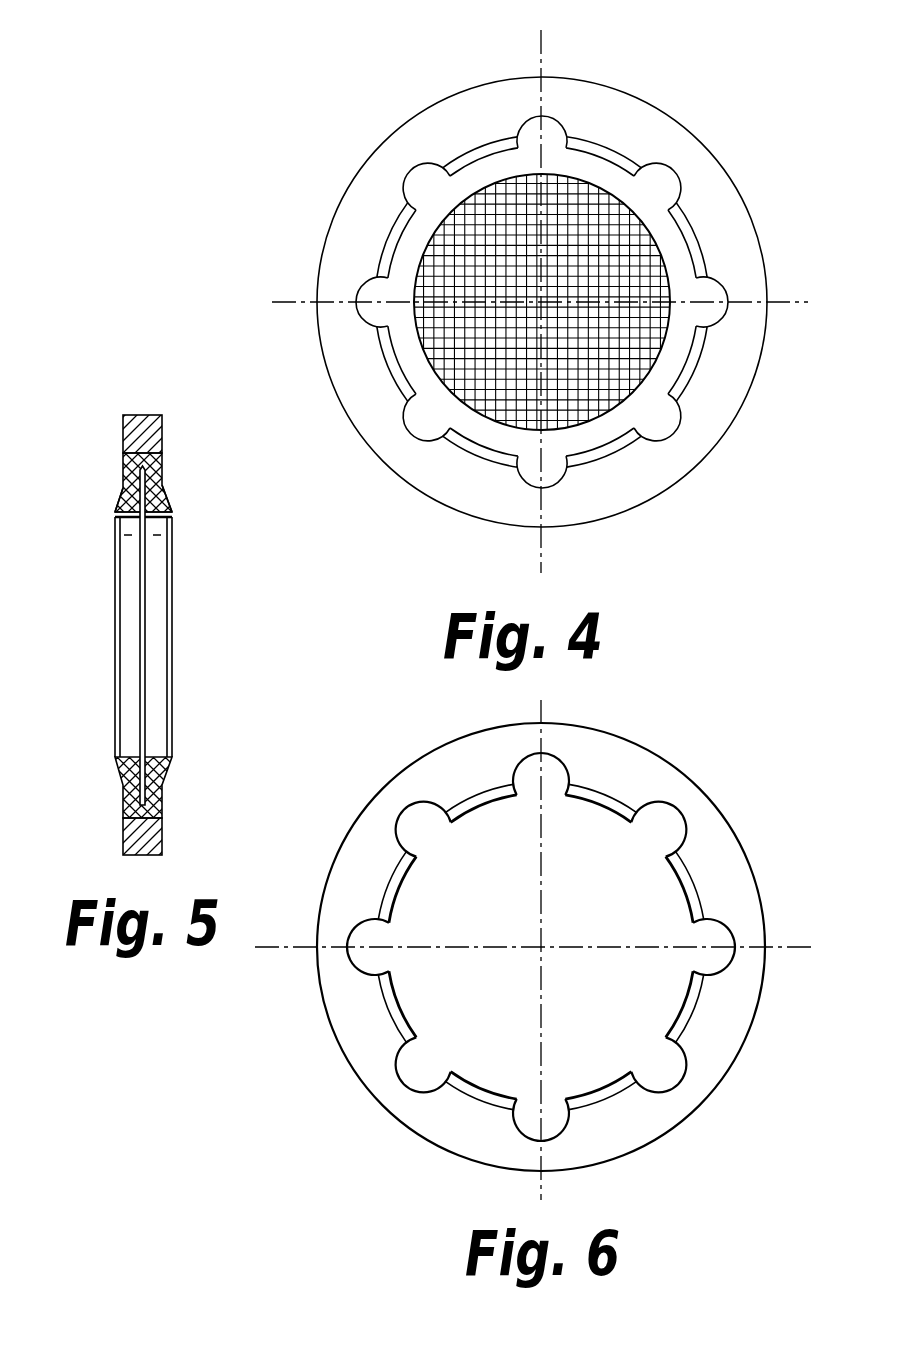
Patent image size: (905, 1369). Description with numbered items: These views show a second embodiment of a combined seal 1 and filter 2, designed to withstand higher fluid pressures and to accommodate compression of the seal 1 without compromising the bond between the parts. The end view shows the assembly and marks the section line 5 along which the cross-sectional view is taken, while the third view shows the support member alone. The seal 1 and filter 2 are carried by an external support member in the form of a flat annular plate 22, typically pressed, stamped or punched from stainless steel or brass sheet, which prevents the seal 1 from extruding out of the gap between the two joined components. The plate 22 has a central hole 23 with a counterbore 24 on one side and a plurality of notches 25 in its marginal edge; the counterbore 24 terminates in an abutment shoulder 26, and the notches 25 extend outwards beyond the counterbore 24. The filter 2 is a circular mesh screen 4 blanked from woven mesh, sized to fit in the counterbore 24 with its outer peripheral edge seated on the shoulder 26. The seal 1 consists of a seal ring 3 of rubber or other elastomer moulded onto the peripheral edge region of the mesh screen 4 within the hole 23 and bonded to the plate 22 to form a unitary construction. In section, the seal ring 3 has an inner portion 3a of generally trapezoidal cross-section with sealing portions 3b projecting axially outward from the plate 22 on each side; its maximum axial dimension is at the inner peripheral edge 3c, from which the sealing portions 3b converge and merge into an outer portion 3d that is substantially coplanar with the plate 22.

In FIG. 5, the seal 1 is at (142, 644).
In FIG. 5, the filter 2 is at (146, 635).
In FIG. 4, the seal ring 3 is at (690, 368).
In FIG. 5, the seal ring 3 is at (142, 644).
In FIG. 5, the inner portion 3a is at (184, 768).
In FIG. 5, the sealing portions 3b is at (118, 498).
In FIG. 5, the inner peripheral edge 3c is at (125, 519).
In FIG. 5, the outer portion 3d is at (163, 468).
In FIG. 4, the mesh screen 4 is at (507, 410).
In FIG. 5, the mesh screen 4 is at (140, 598).
In FIG. 4, the section line 5— 5 is at (478, 573).
In FIG. 4, the annular plate 22 is at (723, 193).
In FIG. 5, the annular plate 22 is at (132, 413).
In FIG. 6, the annular plate 22 is at (657, 758).
In FIG. 6, the central hole 23 is at (581, 980).
In FIG. 6, the counterbore 24 is at (697, 1018).
In FIG. 6, the notches 25 is at (658, 1075).
In FIG. 6, the abutment shoulder 26 is at (462, 1083).